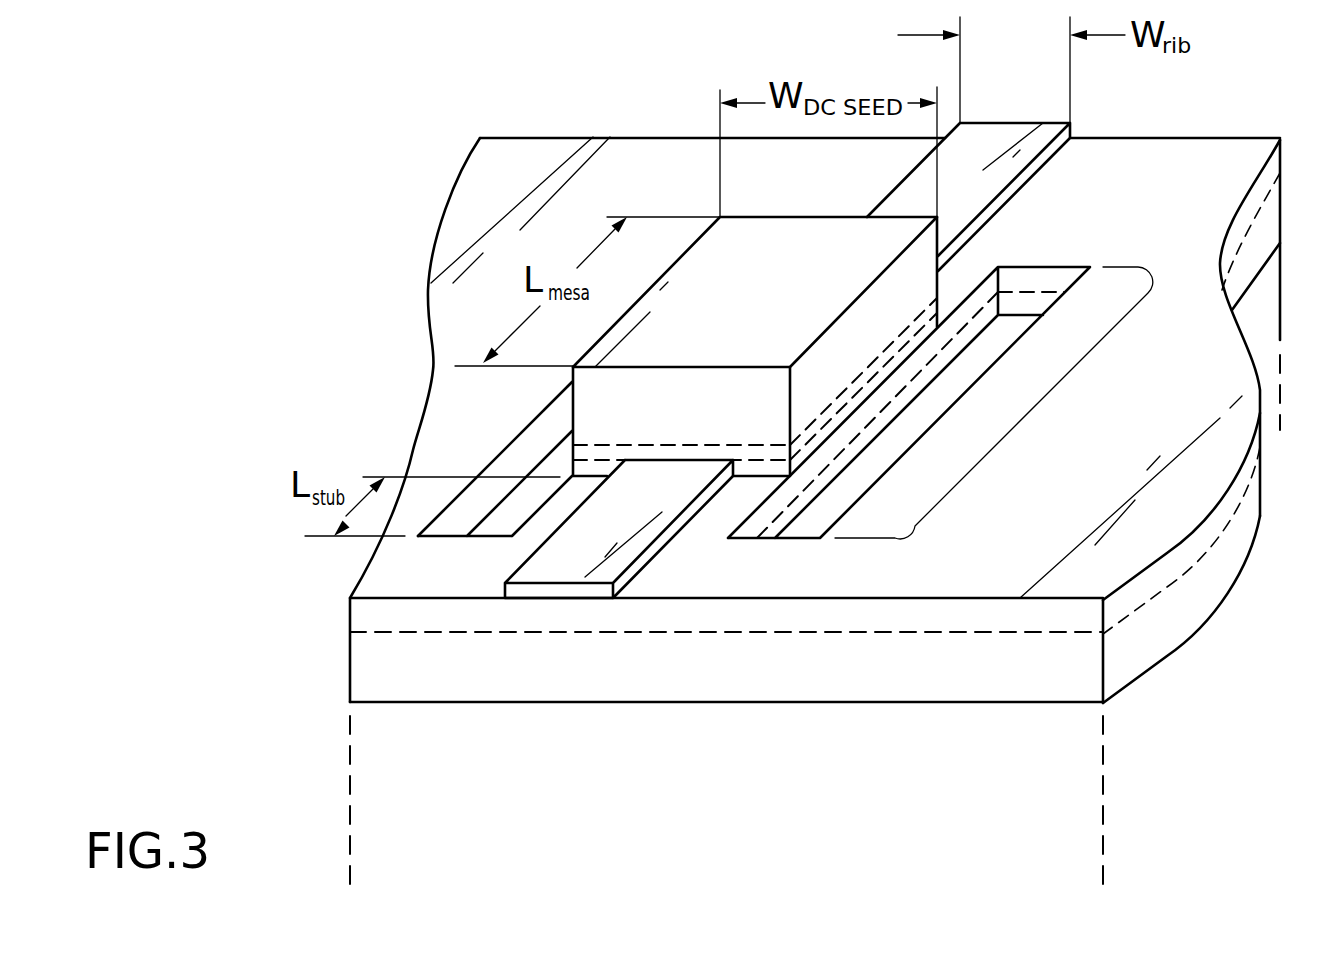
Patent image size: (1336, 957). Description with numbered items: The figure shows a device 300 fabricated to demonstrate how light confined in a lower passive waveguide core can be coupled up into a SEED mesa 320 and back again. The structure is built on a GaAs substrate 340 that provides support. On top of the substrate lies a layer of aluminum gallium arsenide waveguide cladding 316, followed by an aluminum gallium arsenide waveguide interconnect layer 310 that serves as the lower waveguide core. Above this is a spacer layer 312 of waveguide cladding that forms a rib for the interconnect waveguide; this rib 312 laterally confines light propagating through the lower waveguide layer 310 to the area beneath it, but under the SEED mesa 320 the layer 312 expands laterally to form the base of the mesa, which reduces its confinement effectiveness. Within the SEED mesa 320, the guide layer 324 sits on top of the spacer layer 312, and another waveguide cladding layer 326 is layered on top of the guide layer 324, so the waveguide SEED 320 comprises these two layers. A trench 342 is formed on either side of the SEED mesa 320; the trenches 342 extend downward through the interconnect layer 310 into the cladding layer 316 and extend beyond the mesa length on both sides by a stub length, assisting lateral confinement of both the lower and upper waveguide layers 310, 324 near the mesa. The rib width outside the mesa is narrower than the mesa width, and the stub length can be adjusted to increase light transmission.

The device 300 is at (343, 108).
The waveguide interconnect layer 310 is at (350, 610).
The spacer layer 312 is at (505, 590).
The waveguide cladding 316 is at (350, 670).
The SEED mesa 320 is at (776, 311).
The guide layer 324 is at (572, 453).
The waveguide cladding layer 326 is at (572, 410).
The GaAs substrate 340 is at (836, 760).
The trench 342 is at (975, 460).